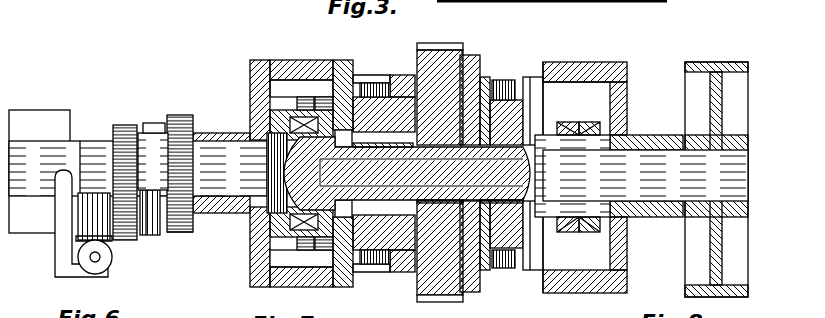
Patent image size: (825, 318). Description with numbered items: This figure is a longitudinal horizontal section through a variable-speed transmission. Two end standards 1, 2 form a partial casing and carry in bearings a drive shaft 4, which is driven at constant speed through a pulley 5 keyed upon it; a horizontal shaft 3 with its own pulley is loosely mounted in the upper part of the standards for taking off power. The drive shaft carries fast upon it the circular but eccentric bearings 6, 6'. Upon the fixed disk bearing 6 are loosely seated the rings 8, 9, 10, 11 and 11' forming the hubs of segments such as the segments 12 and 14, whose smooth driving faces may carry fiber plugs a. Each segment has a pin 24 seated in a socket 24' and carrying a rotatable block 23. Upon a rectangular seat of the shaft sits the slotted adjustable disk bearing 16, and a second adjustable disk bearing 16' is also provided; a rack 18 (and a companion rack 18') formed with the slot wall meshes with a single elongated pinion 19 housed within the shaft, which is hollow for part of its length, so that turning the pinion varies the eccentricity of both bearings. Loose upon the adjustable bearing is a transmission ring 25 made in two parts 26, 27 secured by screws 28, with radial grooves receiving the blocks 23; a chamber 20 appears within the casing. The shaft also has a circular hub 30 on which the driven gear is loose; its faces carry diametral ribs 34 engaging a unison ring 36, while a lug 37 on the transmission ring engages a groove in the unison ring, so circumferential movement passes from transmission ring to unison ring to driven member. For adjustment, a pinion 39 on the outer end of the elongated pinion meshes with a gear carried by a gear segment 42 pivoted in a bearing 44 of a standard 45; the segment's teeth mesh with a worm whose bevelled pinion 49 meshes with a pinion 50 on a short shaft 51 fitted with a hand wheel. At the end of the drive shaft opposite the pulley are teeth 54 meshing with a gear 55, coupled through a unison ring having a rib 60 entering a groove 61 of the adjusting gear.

The end standard 1 is at (262, 120).
The end standard 2 is at (620, 120).
The horizontal shaft 3 is at (262, 255).
The drive shaft 4 is at (720, 160).
The pulley 5 is at (727, 63).
The fixed disk bearing 6 is at (227, 216).
The eccentric bearing 6' is at (640, 190).
The ring 8 is at (600, 226).
The ring 9 is at (590, 232).
The ring 10 is at (587, 124).
The ring 11 is at (578, 116).
The bearing ring 11' is at (558, 233).
The segment 12 is at (262, 92).
The segment 14 is at (262, 271).
The adjustable disk bearing 16 is at (384, 91).
The adjustable disk bearing 16' is at (551, 116).
The rack 18 is at (384, 135).
The bearing 18' is at (491, 213).
The elongated pinion 19 is at (148, 155).
The chamber 20 is at (257, 73).
The block 23 is at (345, 62).
The pin 24 is at (310, 172).
The socket 24' is at (282, 171).
The transmission ring 25 is at (370, 80).
The transmission ring part 26 is at (357, 273).
The transmission ring part 27 is at (387, 273).
The screw 28 is at (527, 82).
The circular hub 30 is at (430, 200).
The diametral rib 34 is at (472, 57).
The unison ring 36 is at (484, 78).
The lug 37 is at (443, 50).
The pinion 39 is at (125, 133).
The gear segment 42 is at (95, 155).
The bearing 44 is at (30, 142).
The standard 45 is at (62, 212).
The bevelled pinion 49 is at (76, 250).
The pinion 50 is at (106, 268).
The short shaft 51 is at (100, 258).
The teeth 54 is at (185, 117).
The gear 55 is at (180, 222).
The diametral rib 60 is at (153, 235).
The diametral groove 61 is at (146, 228).
The plug a is at (262, 101).